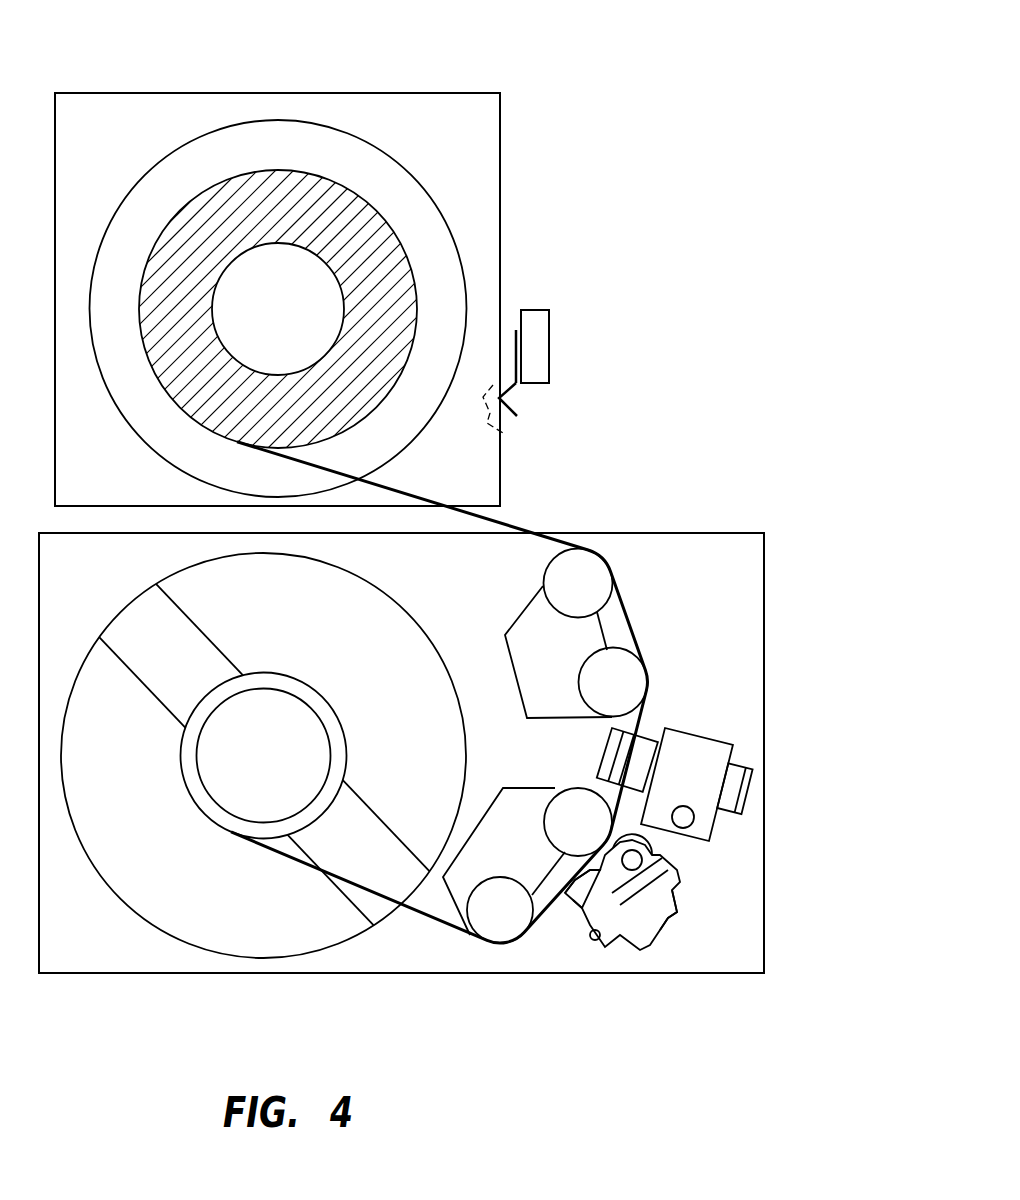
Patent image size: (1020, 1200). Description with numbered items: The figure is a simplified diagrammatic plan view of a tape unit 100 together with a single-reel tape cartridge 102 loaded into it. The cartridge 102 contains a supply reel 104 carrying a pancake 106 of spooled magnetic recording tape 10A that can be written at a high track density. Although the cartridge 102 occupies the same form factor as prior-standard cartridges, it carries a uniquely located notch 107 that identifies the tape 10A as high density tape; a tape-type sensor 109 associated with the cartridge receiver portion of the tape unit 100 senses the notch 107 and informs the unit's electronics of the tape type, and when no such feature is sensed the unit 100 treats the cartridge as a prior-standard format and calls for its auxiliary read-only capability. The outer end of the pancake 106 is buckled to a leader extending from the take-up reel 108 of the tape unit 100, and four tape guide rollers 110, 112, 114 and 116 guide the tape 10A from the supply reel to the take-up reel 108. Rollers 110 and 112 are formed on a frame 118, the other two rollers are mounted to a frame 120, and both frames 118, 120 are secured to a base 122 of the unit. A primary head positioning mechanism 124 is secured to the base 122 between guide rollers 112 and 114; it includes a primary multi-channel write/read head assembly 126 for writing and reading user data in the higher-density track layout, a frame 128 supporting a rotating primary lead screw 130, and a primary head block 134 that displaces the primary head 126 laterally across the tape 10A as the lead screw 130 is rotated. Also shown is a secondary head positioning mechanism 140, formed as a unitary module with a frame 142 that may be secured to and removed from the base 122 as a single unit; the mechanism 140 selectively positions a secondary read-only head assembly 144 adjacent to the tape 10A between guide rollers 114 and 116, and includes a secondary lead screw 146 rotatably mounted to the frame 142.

The tape unit 100 is at (660, 1001).
The single-reel tape cartridge 102 is at (433, 93).
The supply reel 104 is at (460, 253).
The pancake 106 is at (272, 169).
The notch 107 is at (503, 433).
The take-up reel 108 is at (122, 634).
The tape-type sensor 109 is at (549, 330).
The magnetic recording tape 10A is at (512, 525).
The tape guide roller 110 is at (597, 550).
The tape guide roller 112 is at (632, 650).
The tape guide roller 114 is at (568, 805).
The tape guide roller 116 is at (493, 947).
The frame 118 is at (512, 637).
The frame 120 is at (483, 837).
The base 122 is at (747, 542).
The primary head positioning mechanism 124 is at (790, 733).
The primary multi-channel write/read head assembly 126 is at (627, 765).
The frame 128 is at (710, 748).
The primary lead screw 130 is at (695, 817).
The primary head block 134 is at (600, 750).
The secondary head positioning mechanism 140 is at (735, 913).
The frame 142 is at (677, 863).
The secondary read-only head assembly 144 is at (557, 907).
The secondary lead screw 146 is at (673, 910).